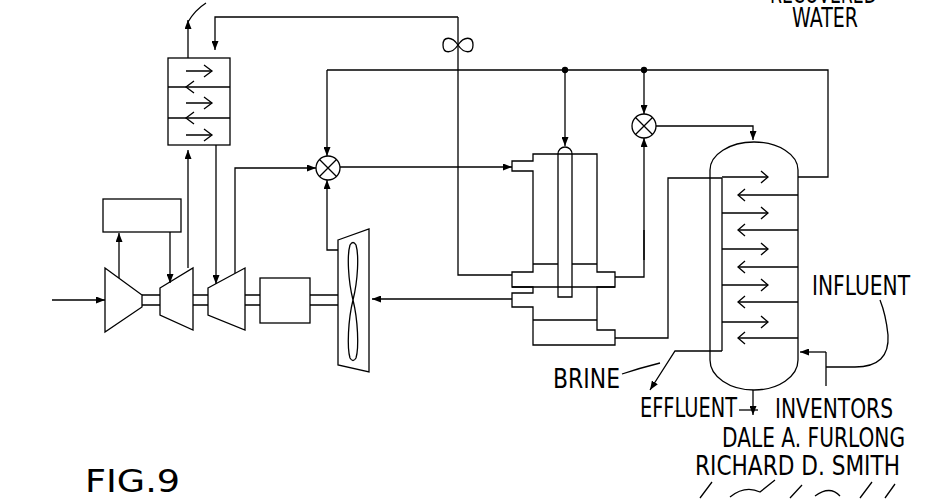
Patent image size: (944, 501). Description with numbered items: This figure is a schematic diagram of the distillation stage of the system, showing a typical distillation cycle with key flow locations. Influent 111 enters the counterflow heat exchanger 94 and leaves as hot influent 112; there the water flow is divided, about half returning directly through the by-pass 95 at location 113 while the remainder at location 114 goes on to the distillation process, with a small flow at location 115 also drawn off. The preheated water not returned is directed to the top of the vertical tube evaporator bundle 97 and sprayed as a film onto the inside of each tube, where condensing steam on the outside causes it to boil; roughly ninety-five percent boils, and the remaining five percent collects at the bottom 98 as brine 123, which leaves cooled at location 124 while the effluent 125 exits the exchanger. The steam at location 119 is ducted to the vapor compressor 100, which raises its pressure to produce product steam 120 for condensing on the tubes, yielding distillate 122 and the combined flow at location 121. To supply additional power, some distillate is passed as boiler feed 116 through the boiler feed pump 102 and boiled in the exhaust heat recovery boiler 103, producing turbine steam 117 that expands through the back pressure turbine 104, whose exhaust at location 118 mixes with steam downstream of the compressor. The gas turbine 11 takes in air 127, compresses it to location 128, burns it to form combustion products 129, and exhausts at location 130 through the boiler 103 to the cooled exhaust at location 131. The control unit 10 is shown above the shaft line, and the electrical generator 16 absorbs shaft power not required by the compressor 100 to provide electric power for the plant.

The control unit 10 is at (112, 199).
The gas turbine 11 is at (149, 333).
The electrical generator 16 is at (288, 323).
The counterflow heat exchanger 94 is at (798, 220).
The by-pass 95 is at (652, 134).
The vertical tube evaporator bundle 97 is at (533, 198).
The bottom of the evaporator 98 is at (533, 330).
The vapor compressor 100 is at (369, 245).
The boiler feed pump 102 is at (475, 44).
The exhaust heat recovery boiler 103 is at (168, 80).
The back pressure turbine 104 is at (238, 325).
The influent 111 is at (827, 352).
The hot influent 112 is at (828, 118).
The flow location 113 is at (645, 103).
The flow location 114 is at (566, 100).
The flow location 115 is at (512, 71).
The boiler feed 116 is at (280, 17).
The turbine steam 117 is at (216, 160).
The flow location 118 is at (235, 216).
The flow location 119 is at (434, 300).
The product steam 120 is at (327, 206).
The flow location 121 is at (388, 166).
The distillate 122 is at (643, 228).
The brine 123 is at (640, 338).
The flow location 124 is at (684, 351).
The effluent 125 is at (732, 126).
The air 127 is at (78, 299).
The flow location 128 is at (119, 252).
The combustion products 129 is at (167, 267).
The flow location 130 is at (188, 165).
The flow location 131 is at (212, 29).